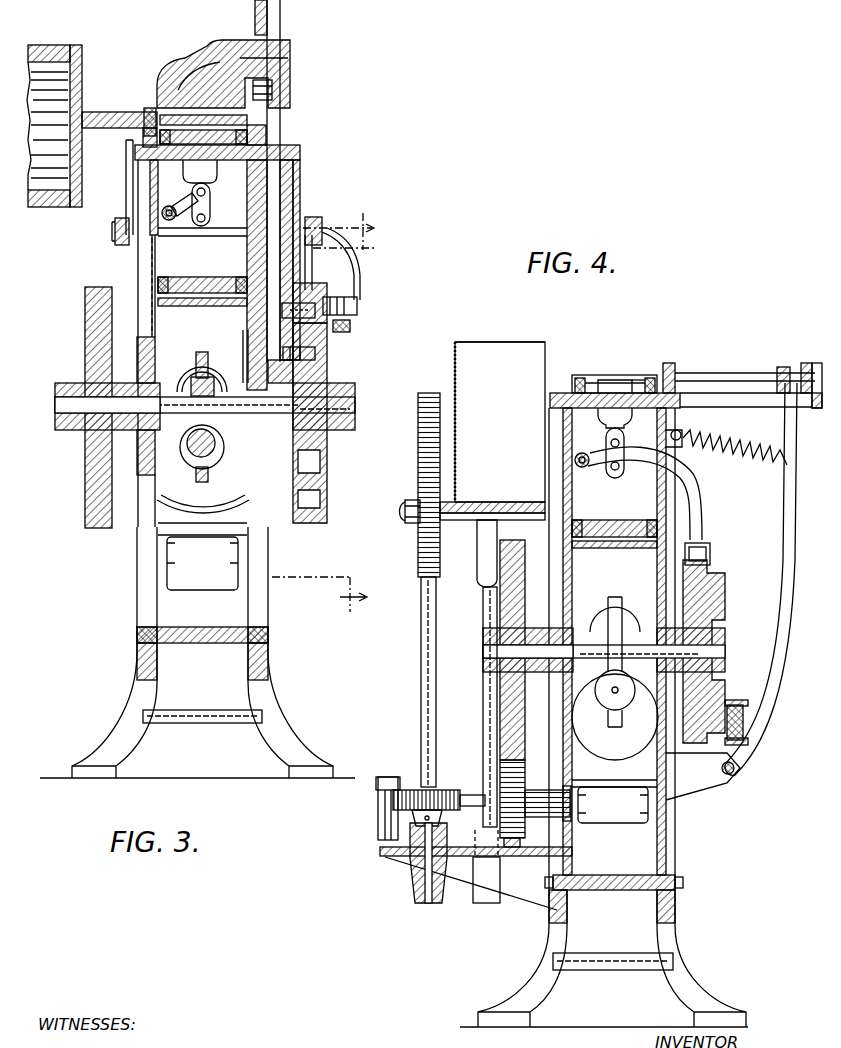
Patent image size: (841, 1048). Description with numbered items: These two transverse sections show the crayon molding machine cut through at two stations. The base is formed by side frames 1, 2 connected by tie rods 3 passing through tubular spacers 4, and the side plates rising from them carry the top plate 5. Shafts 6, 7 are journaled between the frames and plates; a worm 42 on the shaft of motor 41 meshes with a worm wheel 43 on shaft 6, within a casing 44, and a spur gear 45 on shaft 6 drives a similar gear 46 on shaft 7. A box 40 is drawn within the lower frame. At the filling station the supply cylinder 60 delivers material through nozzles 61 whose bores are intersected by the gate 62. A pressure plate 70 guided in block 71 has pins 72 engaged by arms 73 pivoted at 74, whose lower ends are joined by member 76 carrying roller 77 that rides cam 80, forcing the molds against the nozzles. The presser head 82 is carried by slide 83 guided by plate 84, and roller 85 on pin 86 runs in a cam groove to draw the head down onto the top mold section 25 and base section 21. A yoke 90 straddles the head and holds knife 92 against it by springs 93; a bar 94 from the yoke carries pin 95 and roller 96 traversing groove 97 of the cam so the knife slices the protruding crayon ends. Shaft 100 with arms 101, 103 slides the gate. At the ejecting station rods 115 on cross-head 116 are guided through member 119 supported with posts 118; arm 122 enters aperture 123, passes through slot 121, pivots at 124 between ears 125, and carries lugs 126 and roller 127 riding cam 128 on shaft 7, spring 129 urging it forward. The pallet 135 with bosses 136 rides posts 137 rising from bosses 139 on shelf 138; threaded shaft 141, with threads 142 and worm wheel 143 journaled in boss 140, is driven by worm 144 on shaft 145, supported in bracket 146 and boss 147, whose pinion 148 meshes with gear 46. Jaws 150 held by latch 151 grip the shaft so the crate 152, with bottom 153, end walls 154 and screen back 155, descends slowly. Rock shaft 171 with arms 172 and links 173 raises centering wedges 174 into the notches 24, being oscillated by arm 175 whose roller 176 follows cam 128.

In FIG. 3, the side frame 1 is at (263, 621).
In FIG. 4, the side frame 1 is at (683, 953).
In FIG. 3, the side frame 2 is at (138, 593).
In FIG. 4, the side frame 2 is at (545, 933).
In FIG. 4, the tie rod 3 is at (605, 878).
In FIG. 3, the tubular spacer 4 is at (172, 712).
In FIG. 4, the tubular spacer 4 is at (586, 960).
In FIG. 3, the top plate 5 is at (235, 161).
In FIG. 4, the top plate 5 is at (640, 408).
In FIG. 3, the shaft 6 is at (356, 402).
In FIG. 4, the shaft 7 is at (483, 651).
In FIG. 4, the base section 21 is at (608, 370).
In FIG. 4, the inclined notch 24 is at (620, 385).
In FIG. 4, the top mold section 25 is at (634, 378).
In FIG. 4, the box 40 is at (613, 805).
In FIG. 4, the motor 41 is at (600, 713).
In FIG. 3, the worm 42 is at (186, 466).
In FIG. 3, the worm wheel 43 is at (208, 376).
In FIG. 3, the casing 44 is at (193, 373).
In FIG. 4, the casing 44 is at (606, 622).
In FIG. 3, the spur gear 45 is at (86, 461).
In FIG. 4, the spur gear 46 is at (505, 706).
In FIG. 3, the supply cylinder 60 is at (52, 178).
In FIG. 3, the nozzle 61 is at (118, 130).
In FIG. 3, the gate 62 is at (147, 110).
In FIG. 3, the pressure plate 70 is at (256, 122).
In FIG. 3, the block 71 is at (267, 140).
In FIG. 3, the pin 72 is at (262, 137).
In FIG. 3, the arm 73 is at (345, 263).
In FIG. 3, the pivot 74 is at (300, 210).
In FIG. 3, the connecting member 76 is at (351, 329).
In FIG. 3, the anti-friction roller 77 is at (358, 307).
In FIG. 3, the cam 80 is at (330, 383).
In FIG. 3, the presser head 82 is at (190, 95).
In FIG. 3, the slide 83 is at (299, 172).
In FIG. 3, the plate 84 is at (302, 156).
In FIG. 3, the anti-friction roller 85 is at (330, 290).
In FIG. 3, the pin 86 is at (282, 311).
In FIG. 3, the yoke 90 is at (255, 12).
In FIG. 3, the knife 92 is at (215, 84).
In FIG. 3, the spring 93 is at (245, 58).
In FIG. 3, the bar 94 is at (282, 14).
In FIG. 3, the pin 95 is at (246, 352).
In FIG. 3, the anti-friction roller 96 is at (279, 374).
In FIG. 3, the groove 97 is at (318, 354).
In FIG. 3, the shaft 100 is at (115, 236).
In FIG. 3, the arm 101 is at (128, 176).
In FIG. 3, the arm 103 is at (313, 274).
In FIG. 4, the ejecting rod 115 is at (716, 375).
In FIG. 4, the cross-head 116 is at (780, 368).
In FIG. 4, the post 118 is at (818, 409).
In FIG. 4, the member 119 is at (673, 366).
In FIG. 4, the slot 121 is at (775, 408).
In FIG. 4, the arm 122 is at (785, 486).
In FIG. 4, the aperture 123 is at (806, 365).
In FIG. 4, the pivot 124 is at (740, 776).
In FIG. 4, the ear 125 is at (690, 781).
In FIG. 4, the lug 126 is at (735, 700).
In FIG. 4, the anti-friction roller 127 is at (745, 719).
In FIG. 4, the cam 128 is at (718, 613).
In FIG. 4, the spring 129 is at (752, 463).
In FIG. 4, the pallet 135 is at (468, 521).
In FIG. 4, the boss 136 is at (478, 573).
In FIG. 4, the post 137 is at (486, 606).
In FIG. 4, the shelf 138 is at (392, 857).
In FIG. 4, the elongated boss 139 is at (485, 904).
In FIG. 4, the boss 140 is at (412, 881).
In FIG. 4, the shaft 141 is at (424, 699).
In FIG. 4, the threaded portion 142 is at (422, 551).
In FIG. 4, the worm wheel 143 is at (448, 792).
In FIG. 4, the worm 144 is at (412, 790).
In FIG. 4, the shaft 145 is at (470, 807).
In FIG. 4, the bracket 146 is at (380, 819).
In FIG. 4, the boss 147 is at (540, 792).
In FIG. 4, the pinion 148 is at (515, 841).
In FIG. 4, the jaw 150 is at (412, 523).
In FIG. 4, the latch 151 is at (403, 509).
In FIG. 4, the ventilated crate 152 is at (500, 422).
In FIG. 4, the bottom 153 is at (492, 503).
In FIG. 4, the end wall 154 is at (486, 352).
In FIG. 4, the back 155 is at (453, 361).
In FIG. 3, the rock shaft 171 is at (170, 221).
In FIG. 4, the rock shaft 171 is at (583, 468).
In FIG. 3, the arm 172 is at (187, 209).
In FIG. 3, the link 173 is at (210, 205).
In FIG. 4, the link 173 is at (622, 453).
In FIG. 3, the centering wedge 174 is at (200, 171).
In FIG. 4, the centering wedge 174 is at (615, 414).
In FIG. 4, the arm 175 is at (650, 471).
In FIG. 4, the anti-friction roller 176 is at (702, 545).